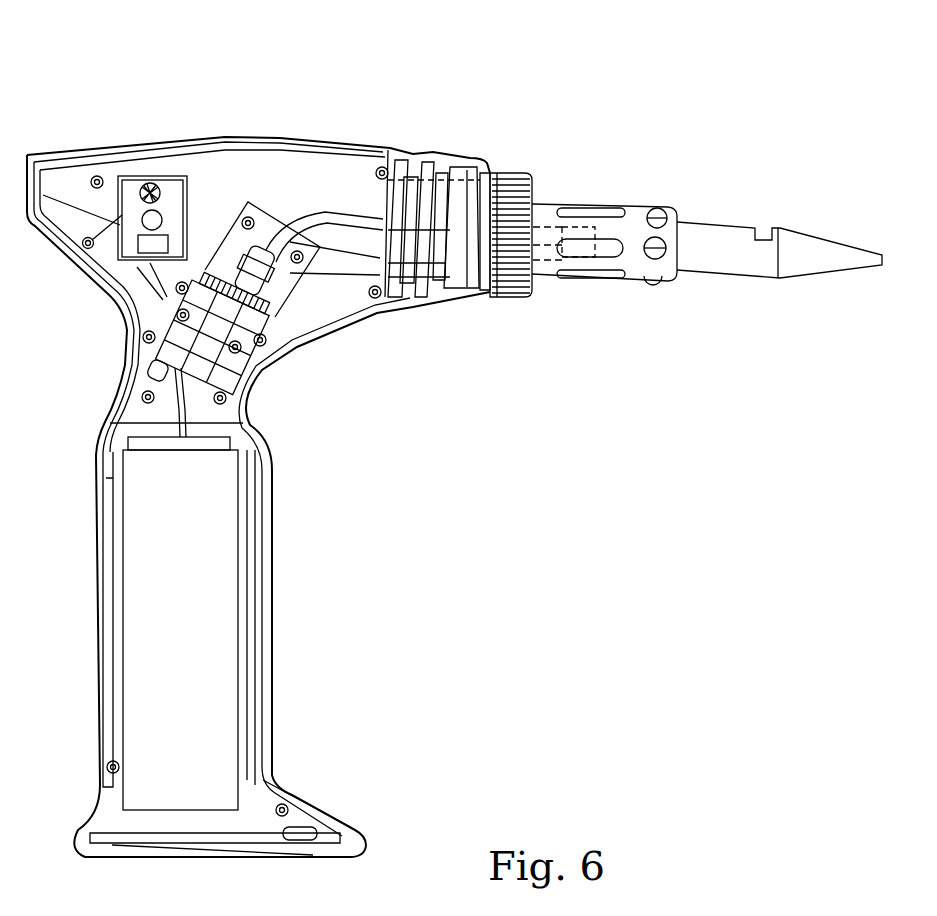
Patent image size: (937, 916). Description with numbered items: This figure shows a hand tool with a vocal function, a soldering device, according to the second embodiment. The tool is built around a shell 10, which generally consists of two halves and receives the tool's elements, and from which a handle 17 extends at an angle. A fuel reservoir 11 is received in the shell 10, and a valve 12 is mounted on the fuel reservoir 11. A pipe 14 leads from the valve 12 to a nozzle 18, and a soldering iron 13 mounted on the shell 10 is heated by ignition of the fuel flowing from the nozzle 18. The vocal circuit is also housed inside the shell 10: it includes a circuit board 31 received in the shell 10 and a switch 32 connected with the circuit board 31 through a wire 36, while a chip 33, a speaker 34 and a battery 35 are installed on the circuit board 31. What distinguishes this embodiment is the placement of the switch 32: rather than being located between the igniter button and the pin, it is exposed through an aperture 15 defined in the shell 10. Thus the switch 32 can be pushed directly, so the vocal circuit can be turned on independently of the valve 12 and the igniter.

The shell 10 is at (390, 153).
The fuel reservoir 11 is at (225, 560).
The valve 12 is at (250, 390).
The soldering iron 13 is at (693, 232).
The pipe 14 is at (321, 212).
The aperture 15 is at (90, 240).
The handle 17 is at (95, 610).
The nozzle 18 is at (585, 262).
The circuit board 31 is at (173, 222).
The switch 32 is at (88, 238).
The chip 33 is at (120, 232).
The speaker 34 is at (147, 190).
The battery 35 is at (153, 220).
The wire 36 is at (136, 245).